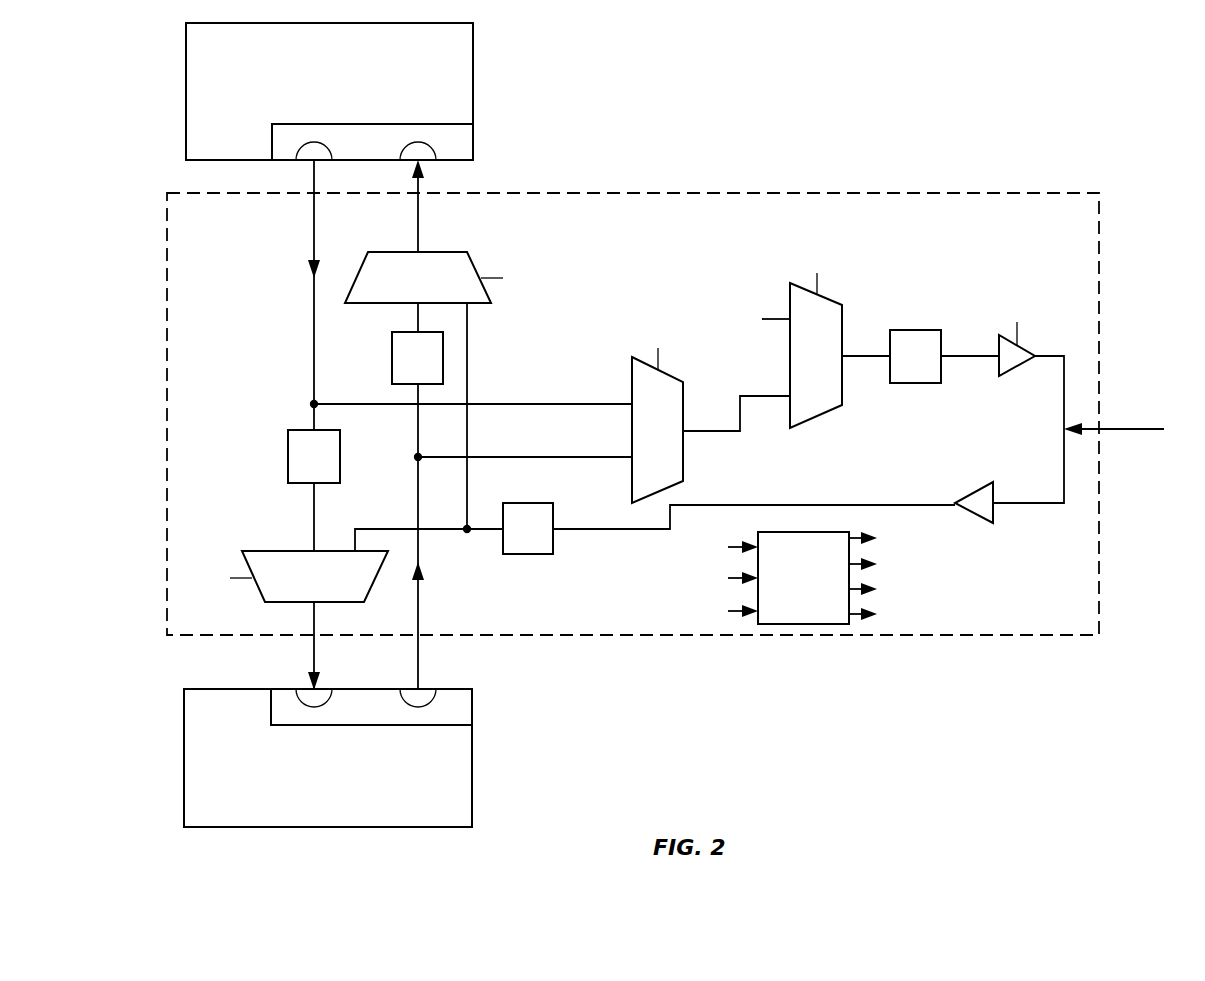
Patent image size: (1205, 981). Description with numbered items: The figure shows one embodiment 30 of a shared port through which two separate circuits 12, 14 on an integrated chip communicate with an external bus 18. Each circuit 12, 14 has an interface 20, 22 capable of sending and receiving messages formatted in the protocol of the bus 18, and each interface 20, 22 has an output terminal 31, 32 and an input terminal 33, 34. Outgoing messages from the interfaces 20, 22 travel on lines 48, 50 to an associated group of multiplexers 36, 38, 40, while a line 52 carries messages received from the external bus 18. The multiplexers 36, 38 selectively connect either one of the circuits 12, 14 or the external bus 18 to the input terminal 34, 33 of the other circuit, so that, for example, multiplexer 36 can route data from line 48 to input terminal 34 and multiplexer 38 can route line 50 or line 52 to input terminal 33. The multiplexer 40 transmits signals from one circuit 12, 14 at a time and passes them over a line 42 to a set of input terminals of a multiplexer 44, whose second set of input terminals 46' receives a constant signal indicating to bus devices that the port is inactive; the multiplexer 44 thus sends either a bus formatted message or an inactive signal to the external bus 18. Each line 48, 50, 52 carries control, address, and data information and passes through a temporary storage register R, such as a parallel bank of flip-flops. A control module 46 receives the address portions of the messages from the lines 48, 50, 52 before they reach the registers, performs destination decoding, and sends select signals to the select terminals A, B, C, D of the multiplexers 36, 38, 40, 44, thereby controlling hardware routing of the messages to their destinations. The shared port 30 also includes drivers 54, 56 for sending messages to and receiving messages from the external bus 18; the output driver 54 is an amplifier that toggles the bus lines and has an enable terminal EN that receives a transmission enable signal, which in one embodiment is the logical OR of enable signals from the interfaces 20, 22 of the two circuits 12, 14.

The circuit 12 is at (336, 101).
The circuit 14 is at (336, 770).
The external bus 18 is at (1145, 428).
The interface 20 is at (462, 136).
The interface 22 is at (462, 704).
The shared port embodiment 30 is at (1083, 197).
The output terminal 31 is at (302, 155).
The output terminal 32 is at (430, 692).
The input terminal 33 is at (427, 156).
The input terminal 34 is at (302, 692).
The multiplexer 36 is at (326, 590).
The multiplexer 38 is at (424, 290).
The multiplexer 40 is at (670, 446).
The line 42 is at (720, 431).
The multiplexer 44 is at (830, 369).
The control module 46 is at (796, 576).
The second set of input terminals 46' is at (756, 303).
The line 48 is at (314, 244).
The line 50 is at (418, 562).
The line 52 is at (575, 530).
The output driver 54 is at (1022, 346).
The driver 56 is at (976, 490).